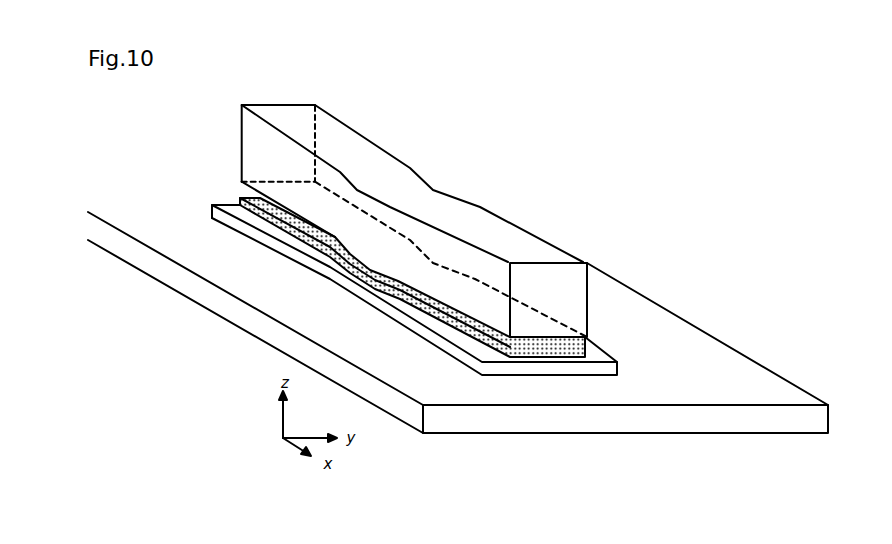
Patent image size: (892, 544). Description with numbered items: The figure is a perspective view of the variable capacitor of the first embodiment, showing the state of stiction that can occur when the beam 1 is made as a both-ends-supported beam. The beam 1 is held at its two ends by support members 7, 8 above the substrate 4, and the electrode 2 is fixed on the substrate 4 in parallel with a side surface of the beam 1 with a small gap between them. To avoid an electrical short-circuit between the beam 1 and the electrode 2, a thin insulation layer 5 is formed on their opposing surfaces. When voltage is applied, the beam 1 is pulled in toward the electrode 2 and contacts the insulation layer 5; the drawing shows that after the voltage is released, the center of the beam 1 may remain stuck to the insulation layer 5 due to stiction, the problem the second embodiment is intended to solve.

The beam 1 is at (410, 183).
The electrode 2 is at (235, 225).
The substrate 4 is at (215, 298).
The insulation layer 5 is at (311, 247).
The support member 7 is at (290, 118).
The support member 8 is at (563, 292).